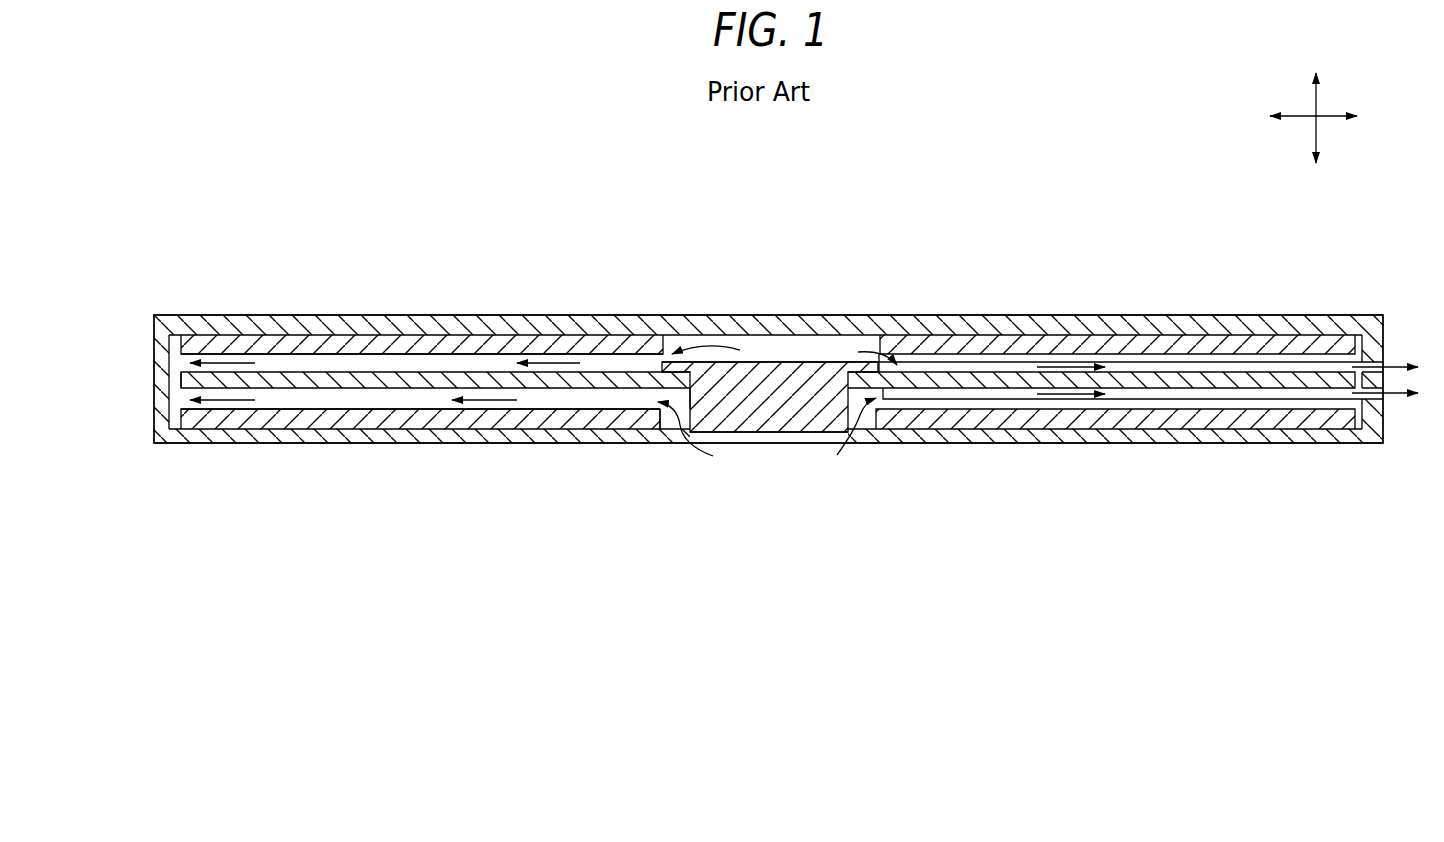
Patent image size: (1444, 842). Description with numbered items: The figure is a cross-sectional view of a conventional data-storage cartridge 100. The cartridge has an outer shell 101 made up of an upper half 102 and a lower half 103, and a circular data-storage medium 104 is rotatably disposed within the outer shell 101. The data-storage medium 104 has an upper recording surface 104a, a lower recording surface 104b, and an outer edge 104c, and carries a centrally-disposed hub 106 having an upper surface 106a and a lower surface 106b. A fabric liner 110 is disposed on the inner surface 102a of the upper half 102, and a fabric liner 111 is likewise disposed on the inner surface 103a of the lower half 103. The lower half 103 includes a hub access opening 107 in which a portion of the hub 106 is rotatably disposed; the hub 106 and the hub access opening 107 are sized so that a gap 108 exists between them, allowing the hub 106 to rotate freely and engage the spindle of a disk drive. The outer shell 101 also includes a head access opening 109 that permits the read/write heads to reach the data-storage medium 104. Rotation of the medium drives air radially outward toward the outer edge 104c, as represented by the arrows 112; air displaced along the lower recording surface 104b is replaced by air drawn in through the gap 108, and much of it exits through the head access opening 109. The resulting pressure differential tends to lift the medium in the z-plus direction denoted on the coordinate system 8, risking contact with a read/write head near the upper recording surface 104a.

The coordinate system 8 is at (1318, 113).
The data-storage cartridge 100 is at (1325, 260).
The outer shell 101 is at (142, 328).
The upper half 102 is at (153, 348).
The inner surface 102a is at (197, 346).
The lower half 103 is at (152, 440).
The inner surface 103a is at (198, 417).
The data-storage medium 104 is at (412, 378).
The upper recording surface 104a is at (353, 465).
The lower recording surface 104b is at (320, 445).
The outer edge 104c is at (180, 377).
The hub 106 is at (792, 405).
The upper surface 106a is at (813, 362).
The lower surface 106b is at (762, 436).
The hub access opening 107 is at (802, 437).
The gap 108 is at (685, 440).
The head access opening 109 is at (1372, 398).
The fabric liner 110 is at (378, 338).
The fabric liner 111 is at (457, 417).
The arrows 112 is at (240, 362).